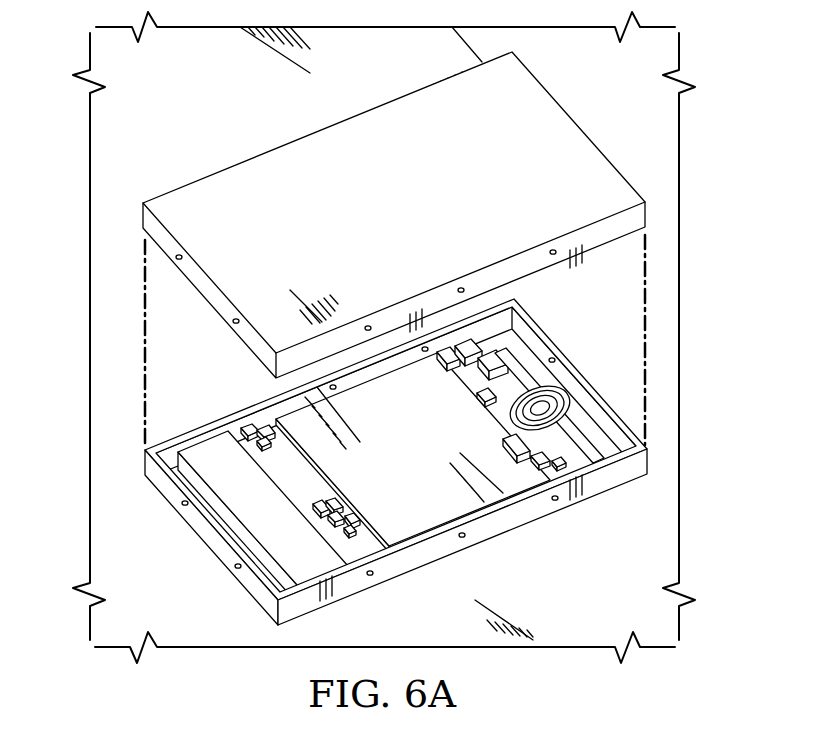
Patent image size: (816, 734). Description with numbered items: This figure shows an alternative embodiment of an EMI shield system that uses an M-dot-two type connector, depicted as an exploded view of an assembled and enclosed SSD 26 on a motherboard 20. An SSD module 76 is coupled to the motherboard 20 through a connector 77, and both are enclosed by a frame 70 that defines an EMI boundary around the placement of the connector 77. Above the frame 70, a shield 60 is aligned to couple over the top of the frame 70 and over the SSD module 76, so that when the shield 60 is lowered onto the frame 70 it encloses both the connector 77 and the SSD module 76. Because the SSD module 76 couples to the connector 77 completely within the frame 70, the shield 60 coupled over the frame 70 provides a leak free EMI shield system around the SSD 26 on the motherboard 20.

The motherboard 20 is at (665, 387).
The SSD 26 is at (401, 334).
The shield 60 is at (237, 177).
The frame 70 is at (396, 430).
The SSD module 76 is at (420, 465).
The M.2 connector 77 is at (222, 443).